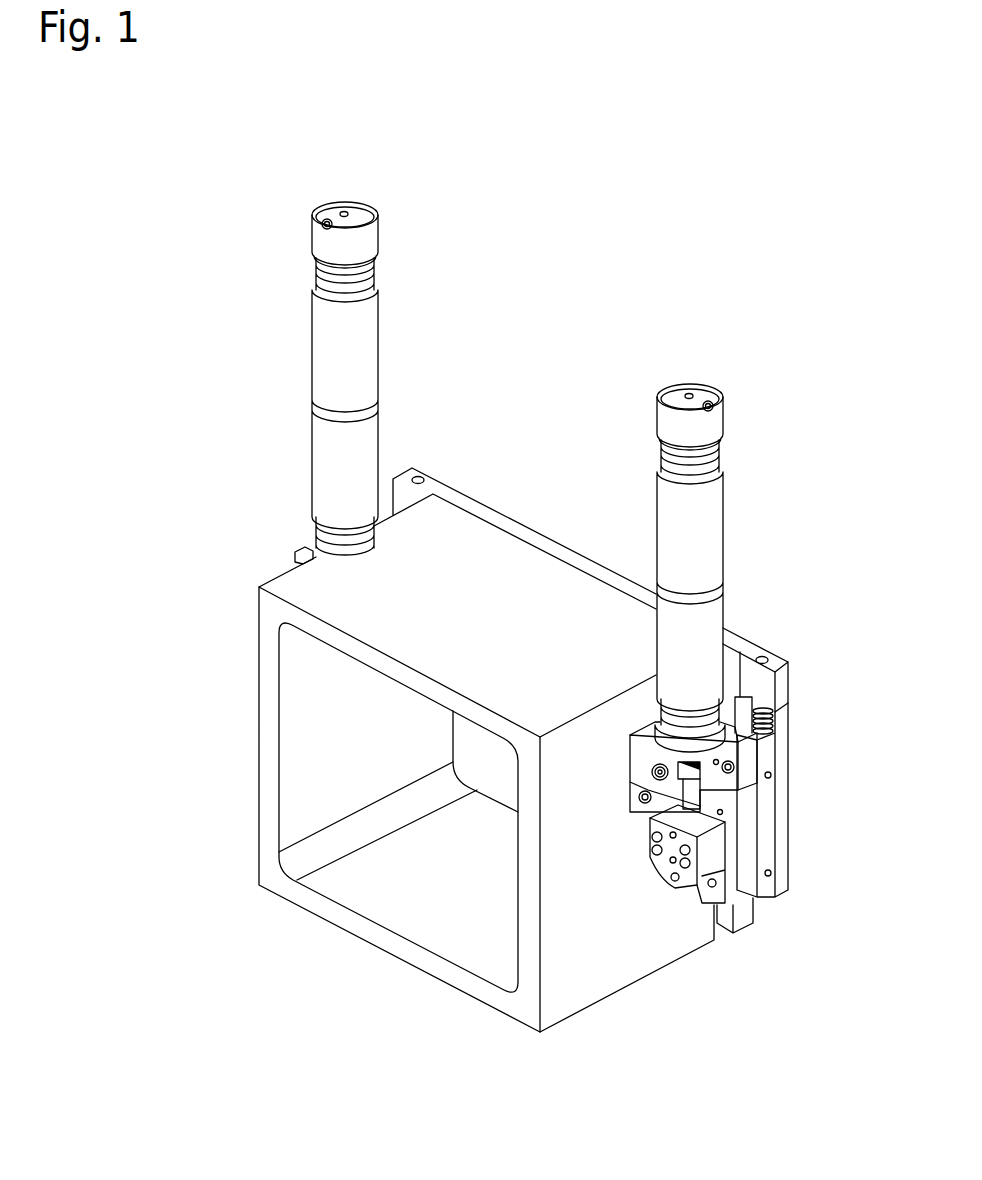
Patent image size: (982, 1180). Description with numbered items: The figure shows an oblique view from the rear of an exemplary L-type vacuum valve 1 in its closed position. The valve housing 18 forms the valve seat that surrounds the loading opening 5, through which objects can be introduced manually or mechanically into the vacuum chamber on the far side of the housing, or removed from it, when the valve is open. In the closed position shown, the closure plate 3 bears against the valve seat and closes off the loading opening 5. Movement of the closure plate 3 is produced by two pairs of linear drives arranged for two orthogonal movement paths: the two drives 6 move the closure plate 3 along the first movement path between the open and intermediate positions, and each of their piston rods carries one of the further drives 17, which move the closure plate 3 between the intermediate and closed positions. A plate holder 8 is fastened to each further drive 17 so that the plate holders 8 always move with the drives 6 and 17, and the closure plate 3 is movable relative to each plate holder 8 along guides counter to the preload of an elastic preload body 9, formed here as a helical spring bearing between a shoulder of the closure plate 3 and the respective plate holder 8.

The vacuum valve 1 is at (592, 375).
The closure plate 3 is at (472, 767).
The loading opening 5 is at (491, 781).
The drive 6 is at (364, 345).
The plate holder 8 is at (780, 855).
The elastic preload body 9 is at (773, 723).
The further drive 17 is at (718, 847).
The valve housing 18 is at (597, 982).